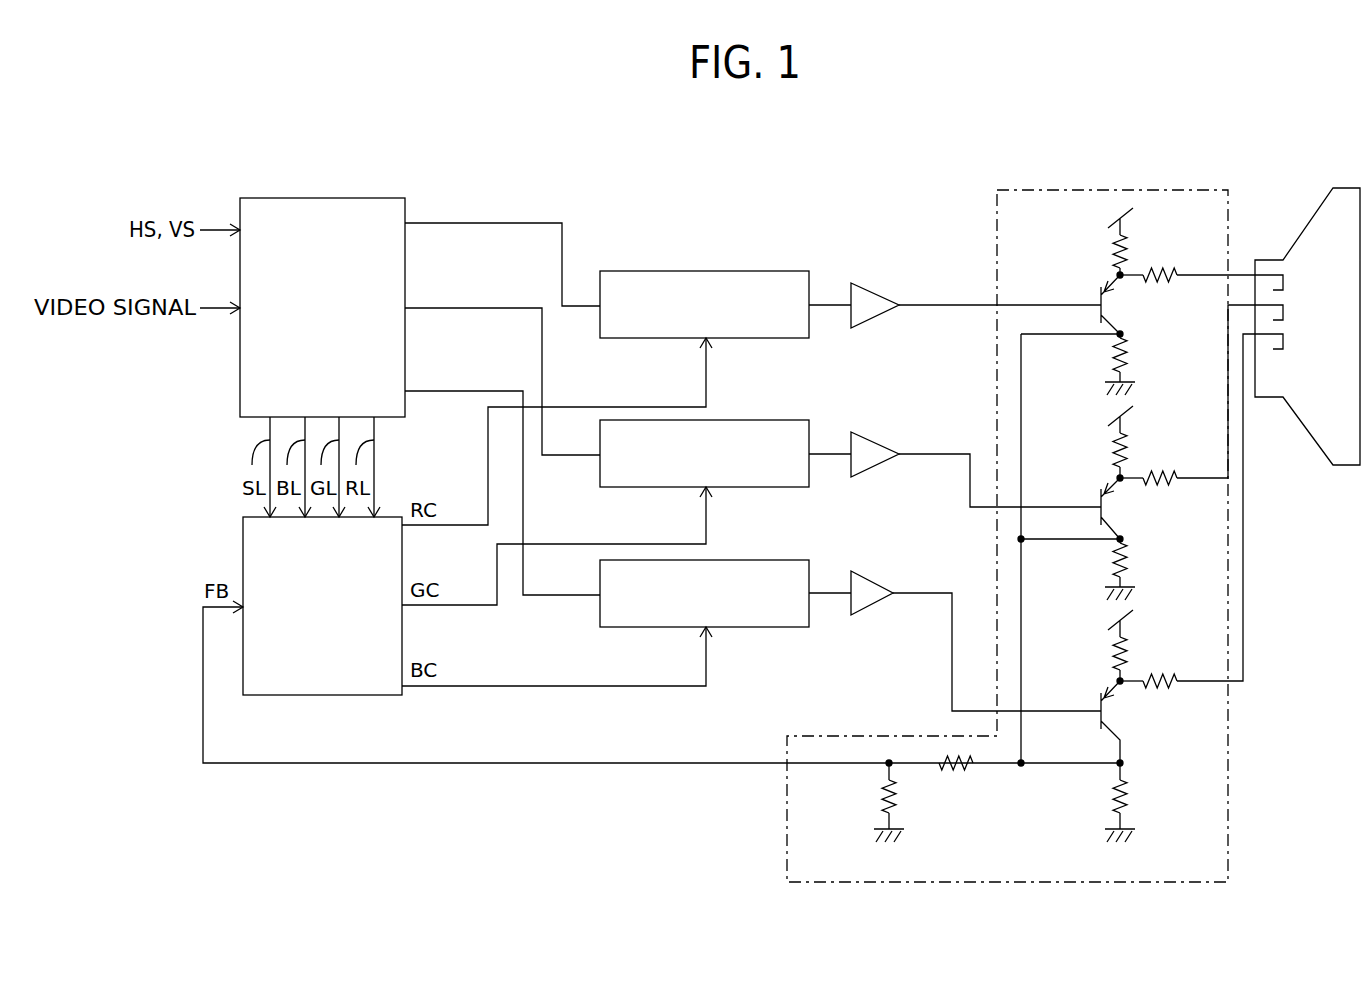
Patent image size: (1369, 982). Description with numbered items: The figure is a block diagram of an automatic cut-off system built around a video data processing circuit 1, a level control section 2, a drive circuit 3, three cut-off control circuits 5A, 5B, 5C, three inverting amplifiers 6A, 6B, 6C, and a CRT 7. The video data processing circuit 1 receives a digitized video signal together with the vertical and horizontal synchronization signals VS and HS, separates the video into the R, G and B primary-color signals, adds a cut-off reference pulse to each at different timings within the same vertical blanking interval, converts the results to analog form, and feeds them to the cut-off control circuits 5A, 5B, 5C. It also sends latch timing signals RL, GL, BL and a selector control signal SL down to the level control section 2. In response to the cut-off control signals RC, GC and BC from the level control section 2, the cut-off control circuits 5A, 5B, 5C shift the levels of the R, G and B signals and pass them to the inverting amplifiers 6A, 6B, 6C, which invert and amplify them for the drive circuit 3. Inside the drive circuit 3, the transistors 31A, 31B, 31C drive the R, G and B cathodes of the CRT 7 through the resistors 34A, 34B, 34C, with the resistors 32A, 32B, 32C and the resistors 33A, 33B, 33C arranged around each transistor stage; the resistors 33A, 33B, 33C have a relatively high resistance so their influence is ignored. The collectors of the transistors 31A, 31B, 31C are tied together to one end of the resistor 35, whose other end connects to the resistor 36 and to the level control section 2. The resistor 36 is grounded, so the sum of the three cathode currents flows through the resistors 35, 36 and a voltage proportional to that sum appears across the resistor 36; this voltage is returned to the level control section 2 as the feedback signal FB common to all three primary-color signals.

The video data processing circuit 1 is at (240, 389).
The level control section 2 is at (354, 695).
The drive circuit 3 is at (1228, 764).
The cut-off control circuit 5A is at (780, 271).
The cut-off control circuit 5B is at (780, 420).
The cut-off control circuit 5C is at (780, 560).
The inverting amplifier 6A is at (868, 284).
The inverting amplifier 6B is at (872, 441).
The inverting amplifier 6C is at (870, 580).
The CRT 7 is at (1345, 466).
The transistor 31A is at (1100, 294).
The transistor 31B is at (1100, 494).
The transistor 31C is at (1100, 697).
The resistor 32A is at (1108, 232).
The resistor 32B is at (1130, 459).
The resistor 32C is at (1130, 647).
The resistor 33A is at (1128, 366).
The resistor 33B is at (1130, 555).
The resistor 33C is at (1130, 800).
The resistor 34A is at (1160, 266).
The resistor 34B is at (1162, 486).
The resistor 34C is at (1164, 690).
The resistor 35 is at (956, 775).
The resistor 36 is at (882, 797).